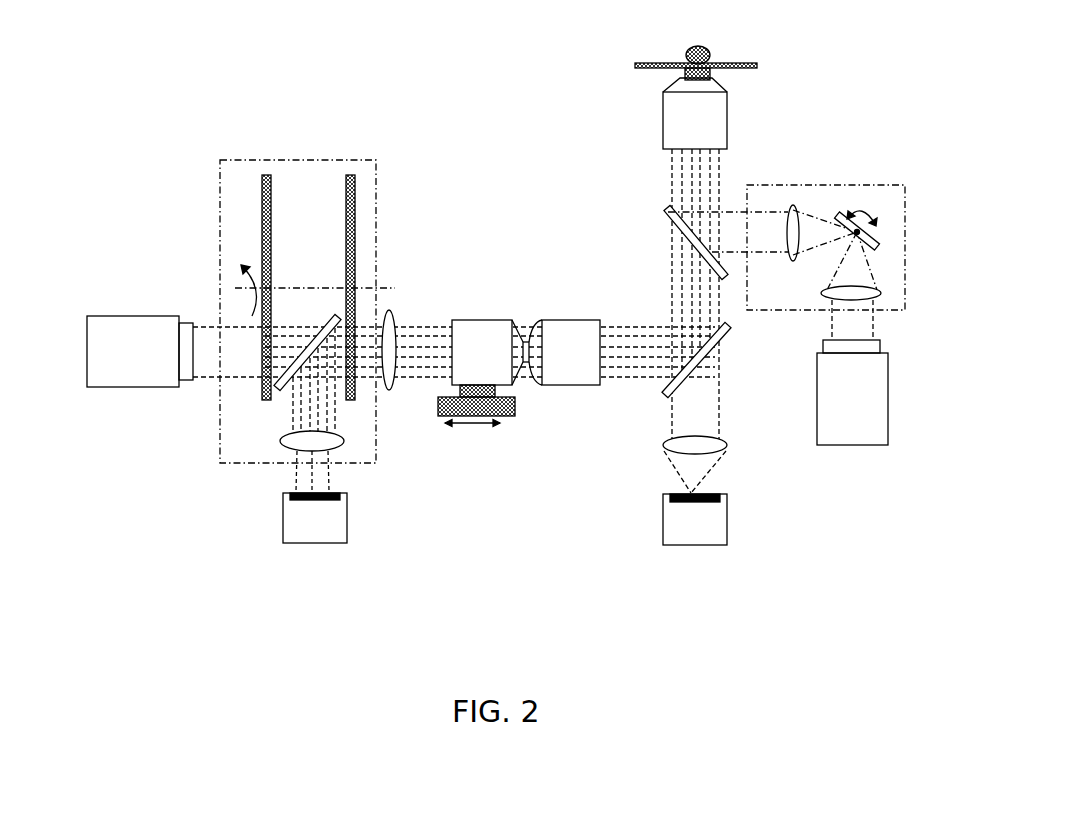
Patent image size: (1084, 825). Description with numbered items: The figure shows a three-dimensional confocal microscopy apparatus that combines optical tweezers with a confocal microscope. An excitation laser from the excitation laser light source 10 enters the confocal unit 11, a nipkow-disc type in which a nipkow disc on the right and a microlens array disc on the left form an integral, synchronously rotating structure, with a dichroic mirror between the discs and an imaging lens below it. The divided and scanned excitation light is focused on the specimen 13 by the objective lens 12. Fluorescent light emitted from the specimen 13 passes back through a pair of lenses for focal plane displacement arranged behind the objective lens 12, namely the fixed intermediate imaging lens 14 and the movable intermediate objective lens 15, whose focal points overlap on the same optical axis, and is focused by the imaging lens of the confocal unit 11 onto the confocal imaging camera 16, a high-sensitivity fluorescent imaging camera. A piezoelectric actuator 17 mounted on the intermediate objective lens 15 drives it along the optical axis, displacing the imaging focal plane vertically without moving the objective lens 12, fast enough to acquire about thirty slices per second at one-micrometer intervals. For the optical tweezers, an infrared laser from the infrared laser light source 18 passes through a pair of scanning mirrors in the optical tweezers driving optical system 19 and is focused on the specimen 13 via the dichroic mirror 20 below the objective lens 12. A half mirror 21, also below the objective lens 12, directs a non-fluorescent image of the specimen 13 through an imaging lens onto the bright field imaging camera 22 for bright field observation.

The excitation laser light source 10 is at (140, 327).
The confocal unit 11 is at (297, 160).
The objective lens 12 is at (675, 125).
The specimen 13 is at (710, 53).
The intermediate imaging lens 14 is at (563, 328).
The intermediate objective lens 15 is at (470, 328).
The confocal imaging camera 16 is at (312, 533).
The piezoelectric actuator 17 is at (470, 407).
The infrared laser light source 18 is at (863, 440).
The optical tweezers driving optical system 19 is at (815, 185).
The dichroic mirror 20 is at (668, 210).
The half mirror 21 is at (705, 360).
The bright field imaging camera 22 is at (705, 535).